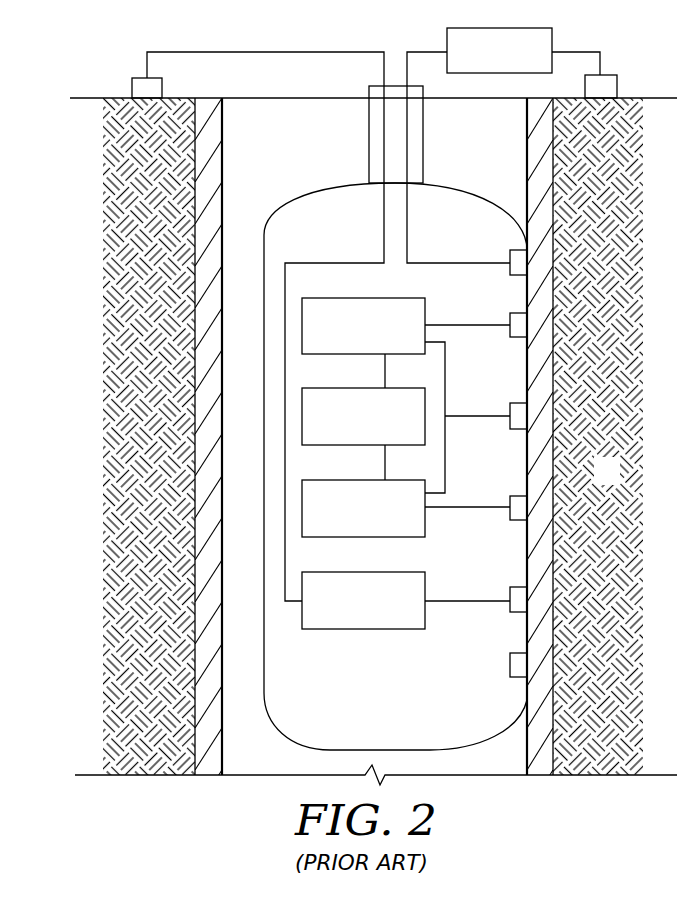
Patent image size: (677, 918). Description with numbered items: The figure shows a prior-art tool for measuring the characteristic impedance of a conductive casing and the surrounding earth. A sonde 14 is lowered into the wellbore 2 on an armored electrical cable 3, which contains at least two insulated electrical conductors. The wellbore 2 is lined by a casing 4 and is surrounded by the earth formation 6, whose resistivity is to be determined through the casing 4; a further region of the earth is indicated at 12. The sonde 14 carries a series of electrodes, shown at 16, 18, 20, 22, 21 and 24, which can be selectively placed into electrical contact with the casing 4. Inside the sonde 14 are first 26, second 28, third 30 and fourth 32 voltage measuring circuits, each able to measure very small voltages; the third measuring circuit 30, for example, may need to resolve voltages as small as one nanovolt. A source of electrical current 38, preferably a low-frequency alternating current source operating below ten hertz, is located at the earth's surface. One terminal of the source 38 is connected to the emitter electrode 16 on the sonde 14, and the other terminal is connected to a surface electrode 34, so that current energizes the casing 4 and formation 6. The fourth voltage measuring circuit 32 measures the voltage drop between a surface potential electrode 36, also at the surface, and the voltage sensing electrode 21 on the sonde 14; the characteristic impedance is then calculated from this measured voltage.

The wellbore 2 is at (553, 125).
The armored electrical cable 3 is at (369, 133).
The casing 4 is at (540, 157).
The formation 6 is at (614, 481).
The formation zone 12 is at (97, 436).
The sonde 14 is at (303, 181).
The emitter electrode 16 is at (510, 252).
The electrode 18 is at (510, 315).
The electrode 20 is at (510, 405).
The voltage sensing electrode 21 is at (510, 588).
The electrode 22 is at (510, 498).
The electrode 24 is at (510, 655).
The first voltage measuring circuit 26 is at (370, 298).
The second voltage measuring circuit 28 is at (370, 480).
The third voltage measuring circuit 30 is at (370, 388).
The fourth voltage measuring circuit 32 is at (370, 572).
The surface electrode 34 is at (620, 80).
The surface potential electrode 36 is at (131, 83).
The source of electrical current 38 is at (553, 36).